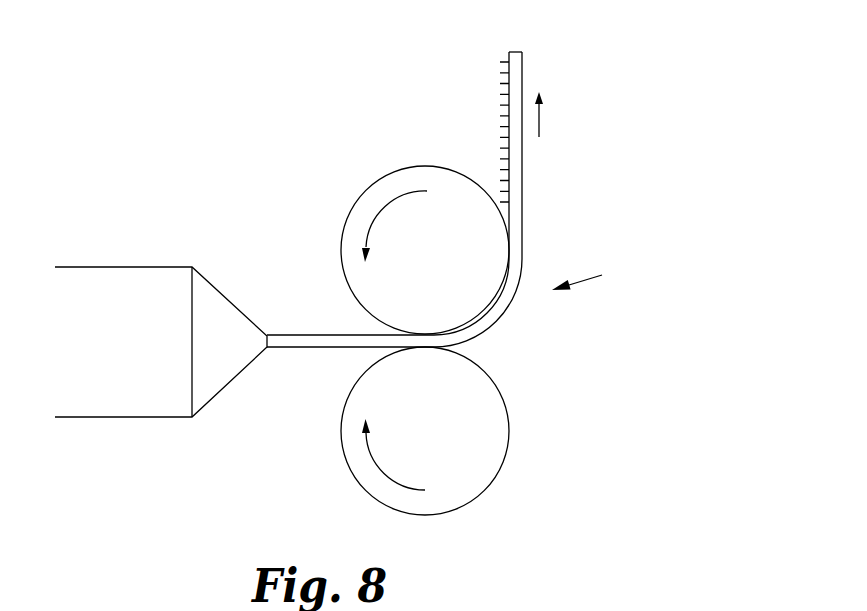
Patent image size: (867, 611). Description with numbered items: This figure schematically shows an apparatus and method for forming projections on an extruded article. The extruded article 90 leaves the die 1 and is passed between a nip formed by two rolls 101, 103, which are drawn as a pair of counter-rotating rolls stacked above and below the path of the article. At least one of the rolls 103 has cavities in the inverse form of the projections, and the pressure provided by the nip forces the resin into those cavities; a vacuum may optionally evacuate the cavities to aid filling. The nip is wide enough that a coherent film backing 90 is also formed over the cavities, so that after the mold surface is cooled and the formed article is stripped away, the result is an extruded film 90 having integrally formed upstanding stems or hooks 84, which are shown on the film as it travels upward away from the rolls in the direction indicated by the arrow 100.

The die 1 is at (215, 370).
The upstanding stems or hooks 84 is at (503, 115).
The extruded article 90 is at (512, 52).
The film 100 is at (600, 275).
The roll 101 is at (378, 483).
The roll 103 is at (387, 187).